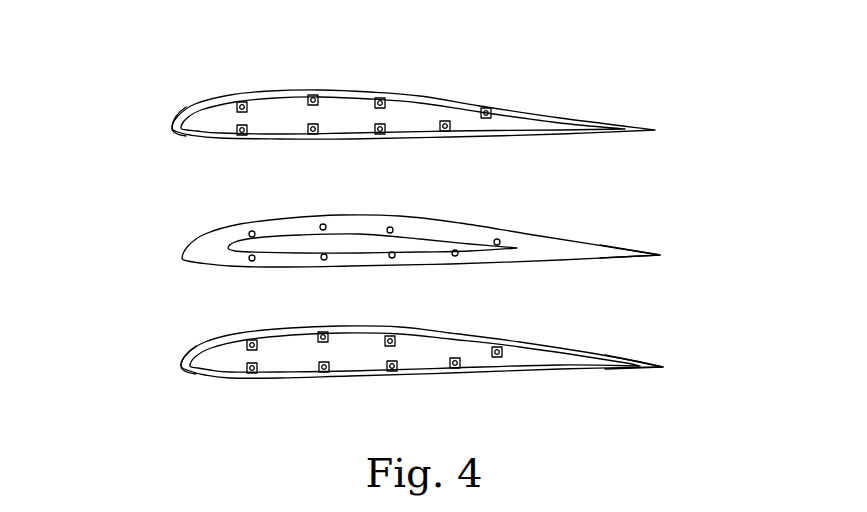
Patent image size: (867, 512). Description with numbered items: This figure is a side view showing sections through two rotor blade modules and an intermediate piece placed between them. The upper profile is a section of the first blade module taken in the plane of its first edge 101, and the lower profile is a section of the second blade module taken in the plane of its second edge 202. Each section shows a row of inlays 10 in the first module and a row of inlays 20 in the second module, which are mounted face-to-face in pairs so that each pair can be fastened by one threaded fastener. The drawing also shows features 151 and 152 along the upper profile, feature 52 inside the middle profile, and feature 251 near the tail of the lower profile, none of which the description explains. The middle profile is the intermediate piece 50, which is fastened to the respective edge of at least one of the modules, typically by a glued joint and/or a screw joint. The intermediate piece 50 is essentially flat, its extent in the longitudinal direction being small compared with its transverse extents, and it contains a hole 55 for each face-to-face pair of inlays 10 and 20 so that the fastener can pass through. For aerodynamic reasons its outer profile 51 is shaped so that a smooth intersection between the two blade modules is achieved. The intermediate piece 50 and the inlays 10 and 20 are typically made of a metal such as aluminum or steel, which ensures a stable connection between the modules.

The inlay 10 is at (448, 124).
The first edge 101 is at (172, 127).
The outer skin of first airfoil 151 is at (300, 88).
The inner skin of first airfoil 152 is at (438, 100).
The intermediate piece 50 is at (210, 253).
The outer profile 51 is at (605, 245).
The inner core of second airfoil 52 is at (412, 240).
The hole 55 is at (321, 225).
The inlay 20 is at (461, 359).
The second edge 202 is at (180, 366).
The trailing edge of third airfoil 251 is at (606, 356).